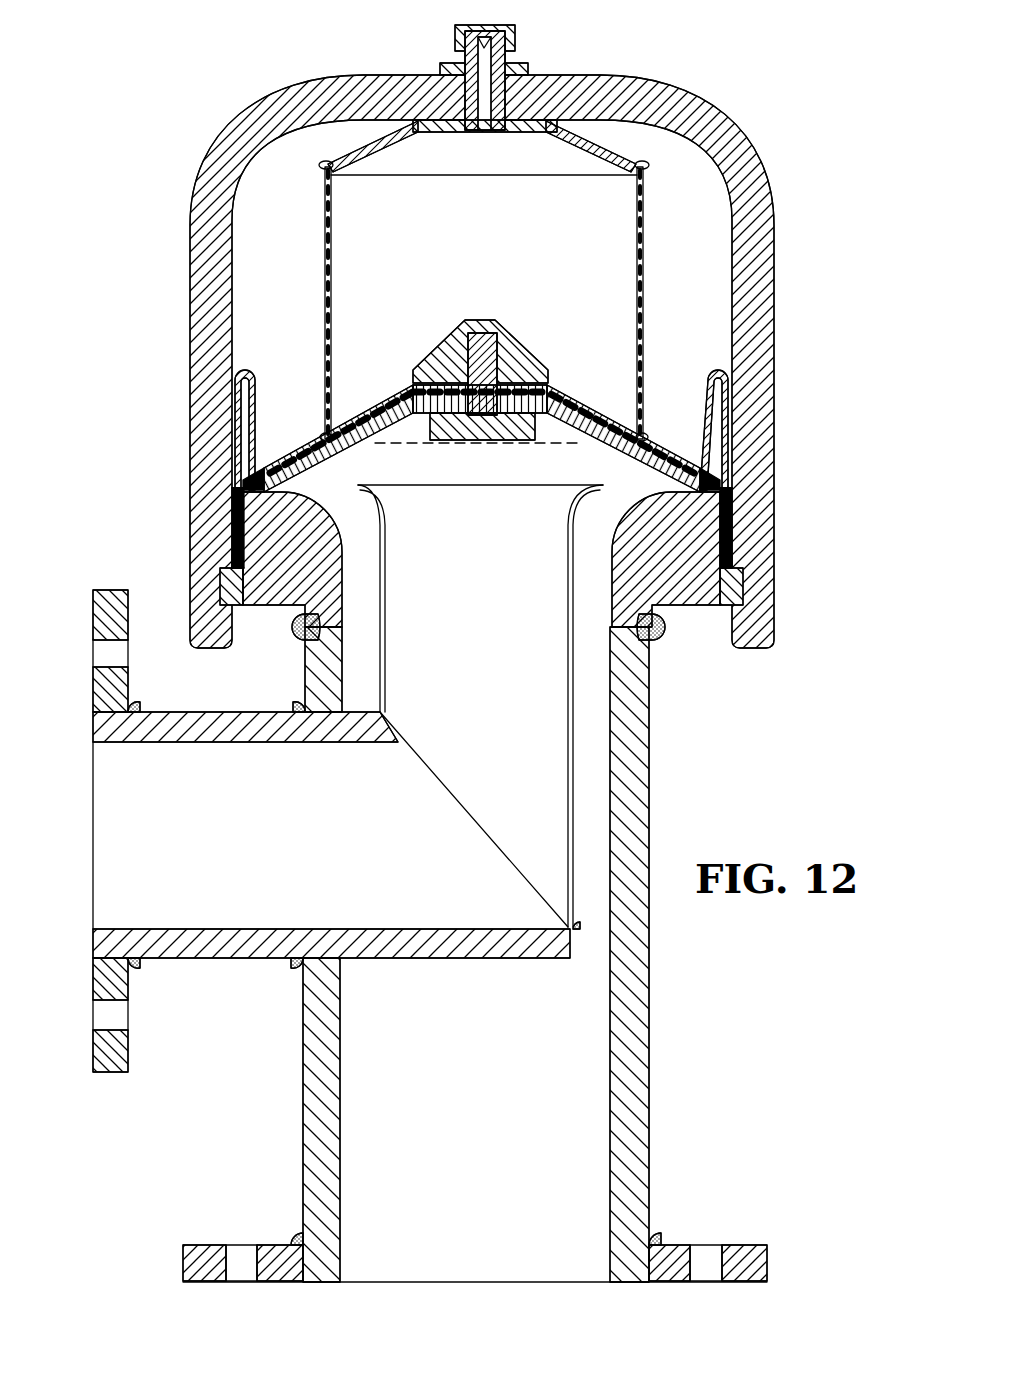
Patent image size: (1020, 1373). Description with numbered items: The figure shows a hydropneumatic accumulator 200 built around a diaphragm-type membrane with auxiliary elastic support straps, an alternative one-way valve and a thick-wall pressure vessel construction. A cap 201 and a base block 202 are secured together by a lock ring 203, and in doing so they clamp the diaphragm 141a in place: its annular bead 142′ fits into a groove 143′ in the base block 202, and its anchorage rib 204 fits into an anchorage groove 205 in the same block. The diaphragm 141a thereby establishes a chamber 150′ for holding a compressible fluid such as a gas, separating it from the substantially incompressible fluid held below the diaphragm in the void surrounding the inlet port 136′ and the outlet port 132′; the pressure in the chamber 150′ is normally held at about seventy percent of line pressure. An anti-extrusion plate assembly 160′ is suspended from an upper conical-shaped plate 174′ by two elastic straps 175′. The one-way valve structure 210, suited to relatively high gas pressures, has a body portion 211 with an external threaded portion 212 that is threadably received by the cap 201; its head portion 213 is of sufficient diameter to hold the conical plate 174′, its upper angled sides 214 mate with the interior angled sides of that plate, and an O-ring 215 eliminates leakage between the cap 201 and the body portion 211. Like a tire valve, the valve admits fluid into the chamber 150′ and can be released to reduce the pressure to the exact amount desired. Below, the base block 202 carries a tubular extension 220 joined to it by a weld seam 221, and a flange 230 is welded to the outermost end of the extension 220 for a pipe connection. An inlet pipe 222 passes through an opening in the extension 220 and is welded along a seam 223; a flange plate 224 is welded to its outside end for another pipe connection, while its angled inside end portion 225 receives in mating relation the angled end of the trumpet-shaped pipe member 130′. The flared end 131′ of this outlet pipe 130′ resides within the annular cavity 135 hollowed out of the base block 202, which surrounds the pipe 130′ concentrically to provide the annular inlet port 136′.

The trumpet-shaped pipe member 130′ is at (480, 692).
The flared end 131′ is at (387, 484).
The outlet port 132′ is at (470, 486).
The annular cavity 135 is at (380, 590).
The annular inlet port 136′ is at (346, 492).
The diaphragm 141a is at (257, 385).
The annular bead 142′ is at (240, 532).
The groove 143′ is at (237, 558).
The chamber 150′ is at (492, 272).
The anti-extrusion plate assembly 160′ is at (520, 320).
The upper conical-shaped plate 174′ is at (497, 176).
The elastic straps 175′ is at (333, 243).
The accumulator 200 is at (530, 361).
The cap 201 is at (768, 300).
The base block 202 is at (283, 570).
The lock ring 203 is at (235, 586).
The anchorage rib 204 is at (240, 506).
The anchorage groove 205 is at (246, 504).
The one-way valve structure 210 is at (505, 91).
The body portion 211 is at (468, 90).
The external threaded portion 212 is at (508, 62).
The head portion 213 is at (492, 132).
The upper angled sides 214 is at (430, 130).
The O-ring 215 is at (530, 76).
The tubular extension 220 is at (325, 672).
The weld seam 221 is at (300, 634).
The inlet pipe 222 is at (228, 927).
The weld seam 223 is at (298, 702).
The flange plate 224 is at (100, 632).
The inside end portion 225 is at (397, 716).
The flange 230 is at (200, 1247).